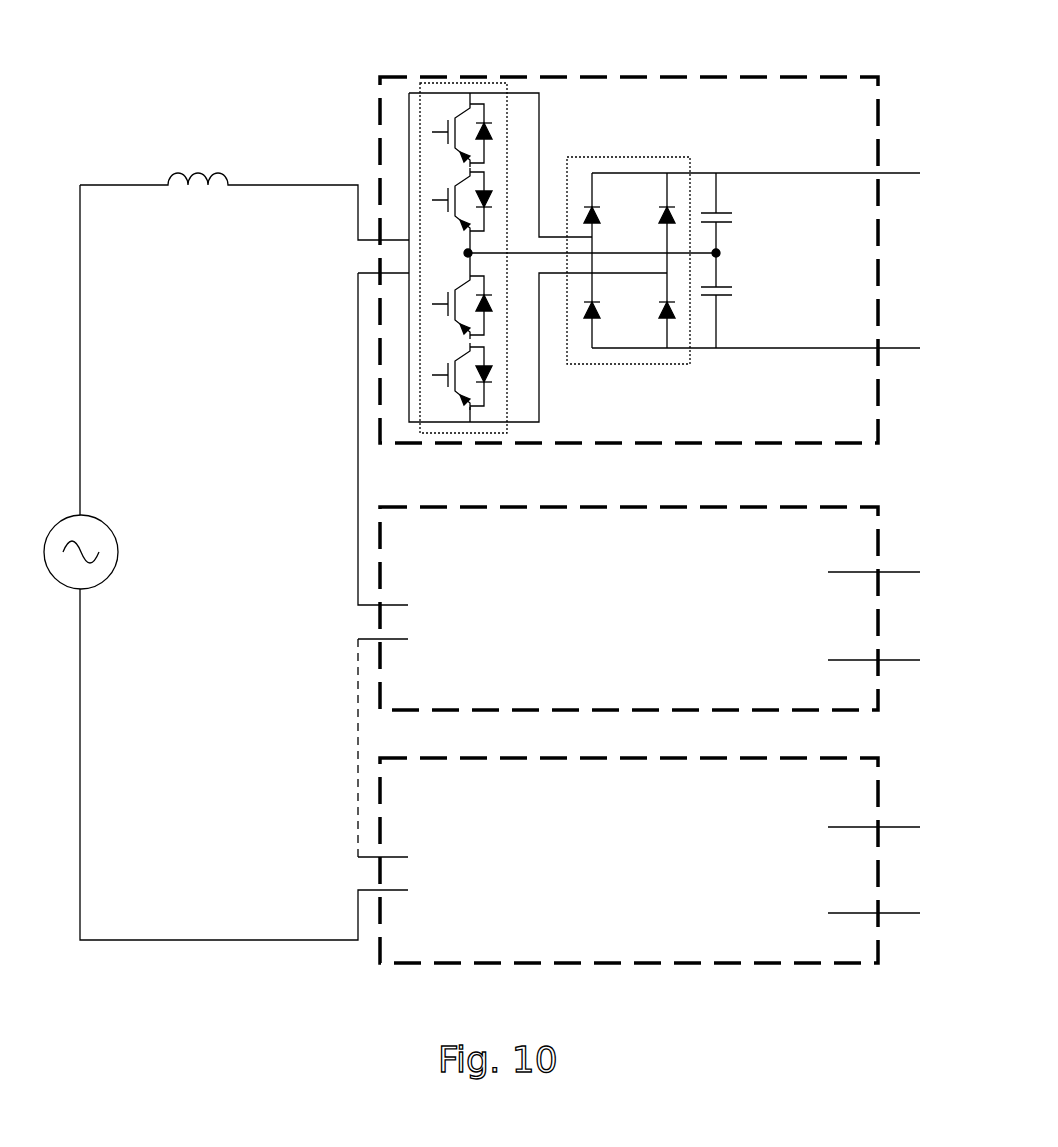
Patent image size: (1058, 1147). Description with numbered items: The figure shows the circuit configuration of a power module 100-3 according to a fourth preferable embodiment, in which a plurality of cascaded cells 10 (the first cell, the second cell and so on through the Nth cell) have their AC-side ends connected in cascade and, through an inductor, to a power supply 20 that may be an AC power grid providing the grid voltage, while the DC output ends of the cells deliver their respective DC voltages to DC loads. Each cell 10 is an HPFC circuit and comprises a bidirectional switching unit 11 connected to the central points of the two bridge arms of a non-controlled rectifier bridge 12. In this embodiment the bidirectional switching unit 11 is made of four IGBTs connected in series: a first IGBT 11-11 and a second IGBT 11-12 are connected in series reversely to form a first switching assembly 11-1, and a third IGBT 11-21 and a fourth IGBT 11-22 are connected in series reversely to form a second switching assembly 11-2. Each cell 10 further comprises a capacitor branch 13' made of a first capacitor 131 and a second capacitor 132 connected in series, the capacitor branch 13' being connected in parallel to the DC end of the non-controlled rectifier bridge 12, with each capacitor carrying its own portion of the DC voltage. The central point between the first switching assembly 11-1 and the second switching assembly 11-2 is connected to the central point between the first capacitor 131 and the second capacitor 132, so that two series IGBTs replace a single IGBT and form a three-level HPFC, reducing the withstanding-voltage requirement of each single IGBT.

The power module 100-3 is at (150, 86).
The cell 10 is at (822, 75).
The bidirectional switching unit 11 is at (458, 82).
The first switching assembly 11-1 is at (262, 14).
The first IGBT 11-11 is at (440, 121).
The second IGBT 11-12 is at (440, 188).
The second switching assembly 11-2 is at (262, 216).
The third IGBT 11-21 is at (440, 293).
The fourth IGBT 11-22 is at (440, 361).
The non-controlled rectifier bridge 12 is at (620, 156).
The capacitor branch 13' is at (775, 271).
The first capacitor 131 is at (723, 210).
The second capacitor 132 is at (723, 297).
The power supply 20 is at (104, 508).